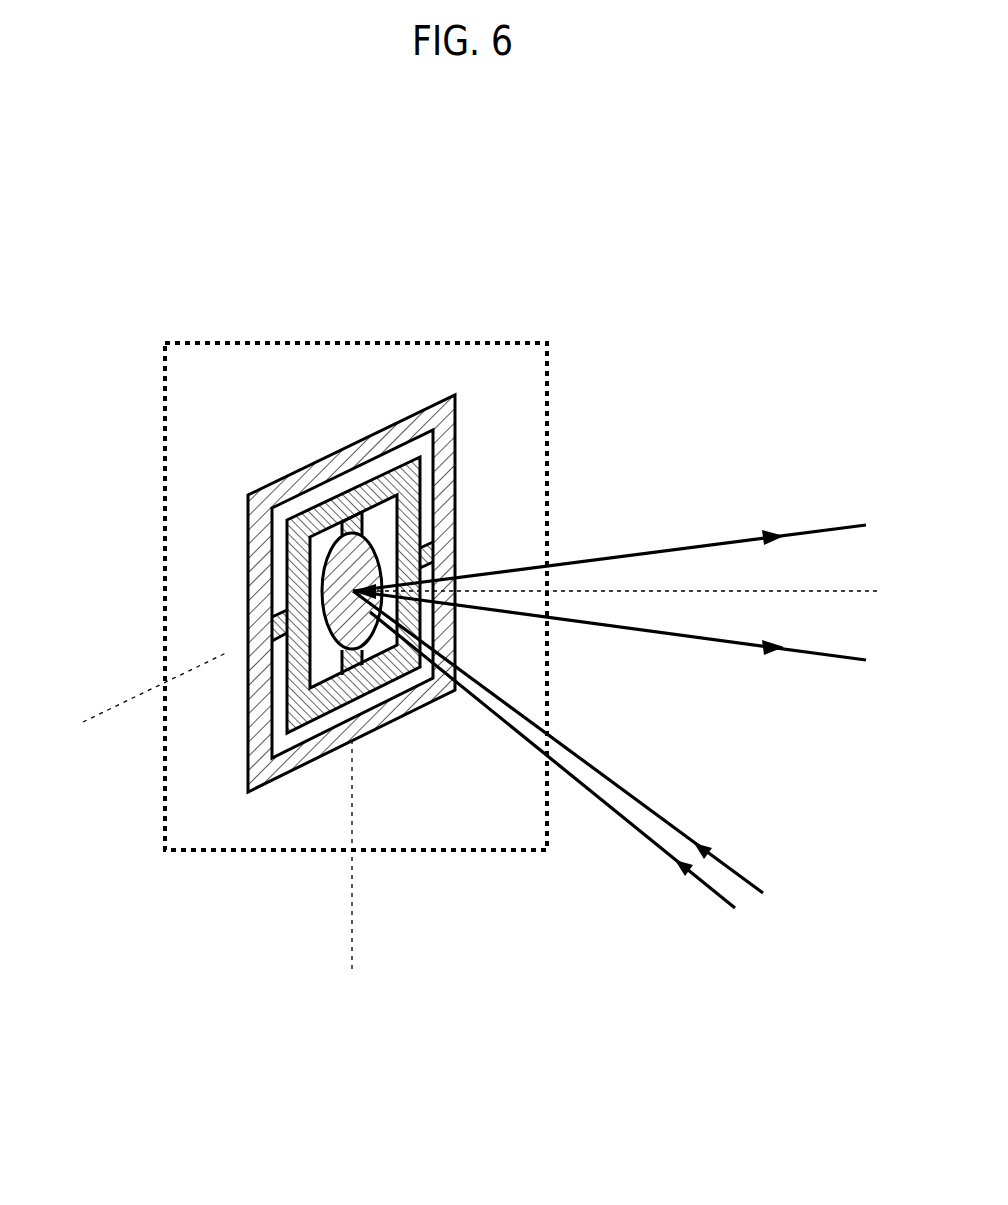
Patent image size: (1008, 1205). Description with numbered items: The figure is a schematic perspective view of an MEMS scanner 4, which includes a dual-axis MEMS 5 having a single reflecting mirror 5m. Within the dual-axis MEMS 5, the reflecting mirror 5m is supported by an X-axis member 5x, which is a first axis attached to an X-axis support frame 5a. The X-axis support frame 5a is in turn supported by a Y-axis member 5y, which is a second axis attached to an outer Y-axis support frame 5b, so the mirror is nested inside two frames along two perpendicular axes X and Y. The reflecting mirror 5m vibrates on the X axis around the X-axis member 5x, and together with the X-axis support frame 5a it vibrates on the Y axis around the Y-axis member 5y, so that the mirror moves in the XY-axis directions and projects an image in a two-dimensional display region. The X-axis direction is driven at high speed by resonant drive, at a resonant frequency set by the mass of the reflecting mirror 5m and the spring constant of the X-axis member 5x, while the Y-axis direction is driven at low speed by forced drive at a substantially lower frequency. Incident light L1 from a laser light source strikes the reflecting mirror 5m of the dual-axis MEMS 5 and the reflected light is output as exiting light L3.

The MEMS scanner 4 is at (277, 343).
The dual-axis MEMS 5 is at (388, 428).
The X-axis support frame 5a is at (323, 582).
The Y-axis support frame 5b is at (450, 412).
The reflecting mirror 5m is at (405, 535).
The X-axis member 5x is at (355, 520).
The Y-axis member 5y is at (273, 620).
The incident light L1 is at (632, 789).
The exiting light L3 is at (670, 547).
The X axis X is at (352, 879).
The Y axis Y is at (141, 702).